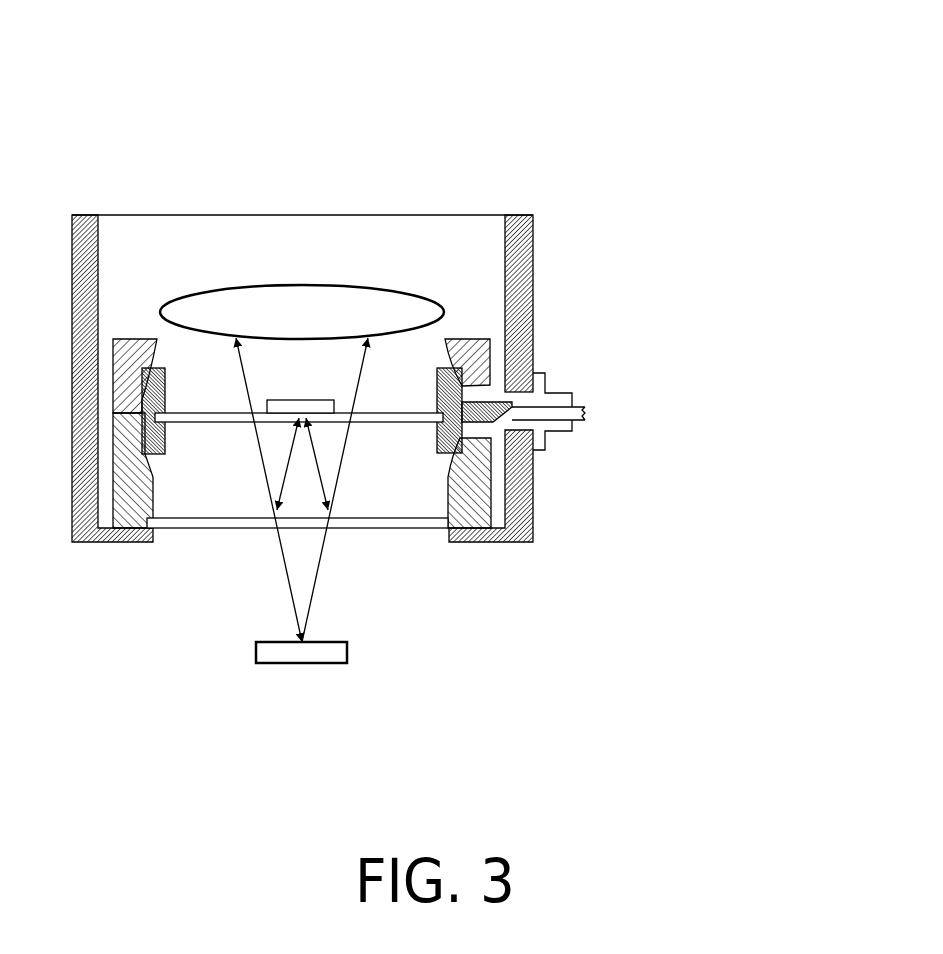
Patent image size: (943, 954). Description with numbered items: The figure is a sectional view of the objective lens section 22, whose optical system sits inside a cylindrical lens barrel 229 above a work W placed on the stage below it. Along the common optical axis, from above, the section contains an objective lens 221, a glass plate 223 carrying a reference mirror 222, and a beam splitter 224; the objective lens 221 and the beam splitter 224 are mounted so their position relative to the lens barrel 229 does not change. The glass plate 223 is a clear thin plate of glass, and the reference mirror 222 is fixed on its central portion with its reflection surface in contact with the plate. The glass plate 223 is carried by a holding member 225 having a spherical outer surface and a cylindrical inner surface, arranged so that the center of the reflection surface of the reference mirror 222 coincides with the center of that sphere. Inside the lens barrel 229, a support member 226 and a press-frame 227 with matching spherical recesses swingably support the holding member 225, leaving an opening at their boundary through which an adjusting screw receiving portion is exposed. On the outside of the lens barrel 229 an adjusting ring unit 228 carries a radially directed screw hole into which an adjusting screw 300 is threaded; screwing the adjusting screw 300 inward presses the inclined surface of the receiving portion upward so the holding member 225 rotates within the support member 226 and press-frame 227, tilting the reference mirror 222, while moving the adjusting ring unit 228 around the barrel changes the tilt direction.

The objective lens section 22 is at (300, 53).
The objective lens 221 is at (390, 290).
The reference mirror 222 is at (280, 400).
The glass plate 223 is at (377, 413).
The beam splitter 224 is at (212, 523).
The holding member 225 is at (553, 402).
The support member 226 is at (490, 460).
The press-frame 227 is at (481, 357).
The adjusting ring unit 228 is at (462, 400).
The lens barrel 229 is at (520, 532).
The adjusting screw 300 is at (570, 413).
The work W is at (330, 640).